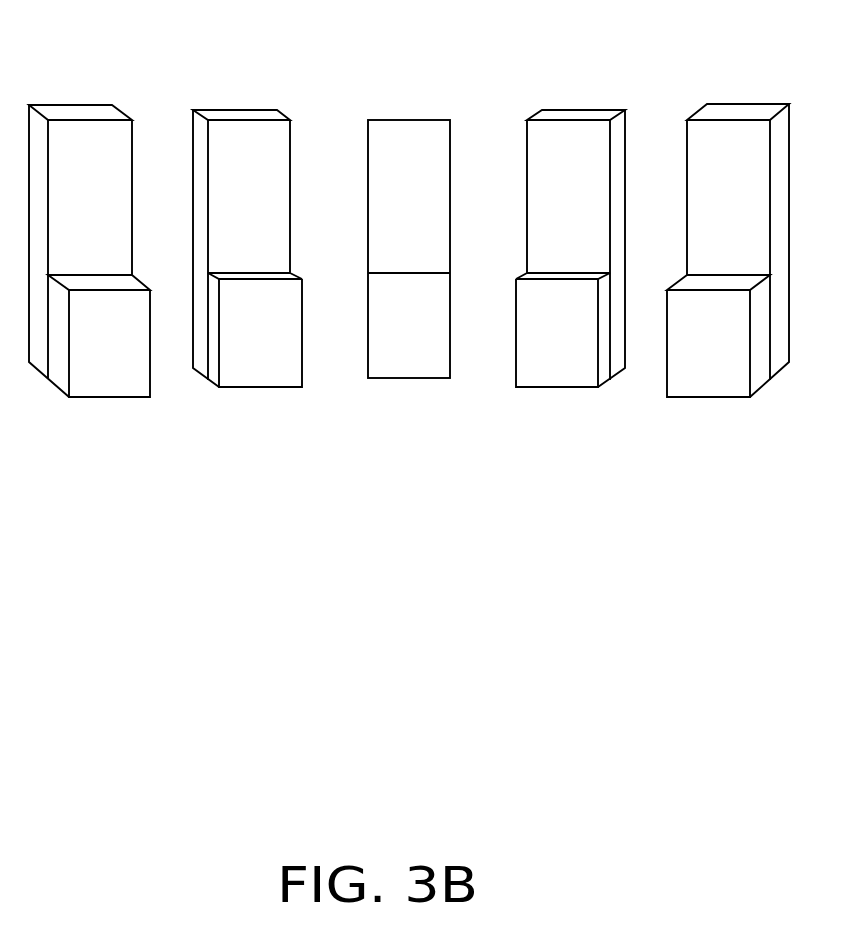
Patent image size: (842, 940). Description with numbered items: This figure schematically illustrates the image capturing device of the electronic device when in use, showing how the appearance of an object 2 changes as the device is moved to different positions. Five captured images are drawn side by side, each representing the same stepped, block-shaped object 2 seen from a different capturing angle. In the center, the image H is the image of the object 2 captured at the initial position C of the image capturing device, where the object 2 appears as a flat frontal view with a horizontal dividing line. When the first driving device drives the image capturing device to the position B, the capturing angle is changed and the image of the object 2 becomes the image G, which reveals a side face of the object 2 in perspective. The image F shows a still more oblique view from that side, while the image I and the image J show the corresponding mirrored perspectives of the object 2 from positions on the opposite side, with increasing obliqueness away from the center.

The image F is at (77, 147).
The image G is at (245, 162).
The image H is at (398, 163).
The image I is at (565, 162).
The image J is at (723, 170).
The object 2 is at (420, 175).